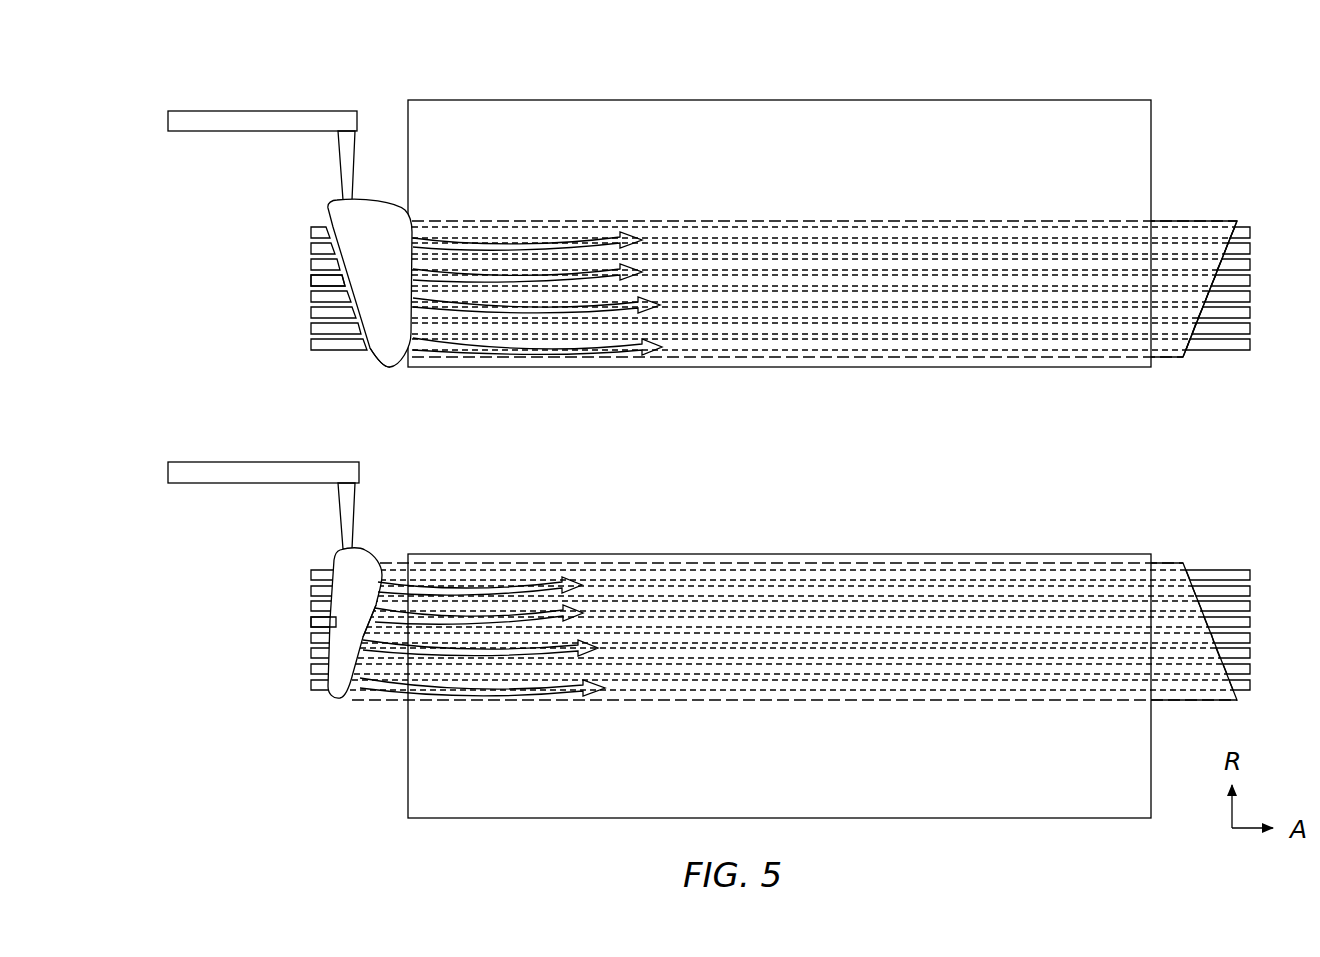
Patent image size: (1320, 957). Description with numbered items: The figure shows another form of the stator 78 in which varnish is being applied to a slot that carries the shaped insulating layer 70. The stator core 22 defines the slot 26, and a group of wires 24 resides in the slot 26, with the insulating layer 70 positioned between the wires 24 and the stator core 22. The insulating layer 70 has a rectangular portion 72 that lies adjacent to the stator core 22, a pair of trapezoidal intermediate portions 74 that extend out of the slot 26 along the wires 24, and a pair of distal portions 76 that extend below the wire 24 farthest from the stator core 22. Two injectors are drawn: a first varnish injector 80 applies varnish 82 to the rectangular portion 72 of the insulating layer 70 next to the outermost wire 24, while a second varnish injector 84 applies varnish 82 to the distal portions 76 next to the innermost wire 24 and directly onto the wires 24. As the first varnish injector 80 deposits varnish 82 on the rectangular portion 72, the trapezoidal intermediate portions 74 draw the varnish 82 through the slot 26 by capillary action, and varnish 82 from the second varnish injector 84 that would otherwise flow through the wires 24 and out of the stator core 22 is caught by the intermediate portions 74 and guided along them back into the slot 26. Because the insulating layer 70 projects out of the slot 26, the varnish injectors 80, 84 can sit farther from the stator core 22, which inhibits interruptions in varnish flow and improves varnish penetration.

The stator core 22 is at (543, 100).
The wires 24 is at (312, 231).
The slot 26 is at (265, 277).
The insulating layer 70 is at (1200, 203).
The rectangular portion 72 is at (1170, 360).
The trapezoidal intermediate portions 74 is at (363, 282).
The distal portions 76 is at (388, 362).
The stator 78 is at (1122, 75).
The first varnish injector 80 is at (262, 87).
The varnish 82 is at (341, 231).
The second varnish injector 84 is at (232, 460).